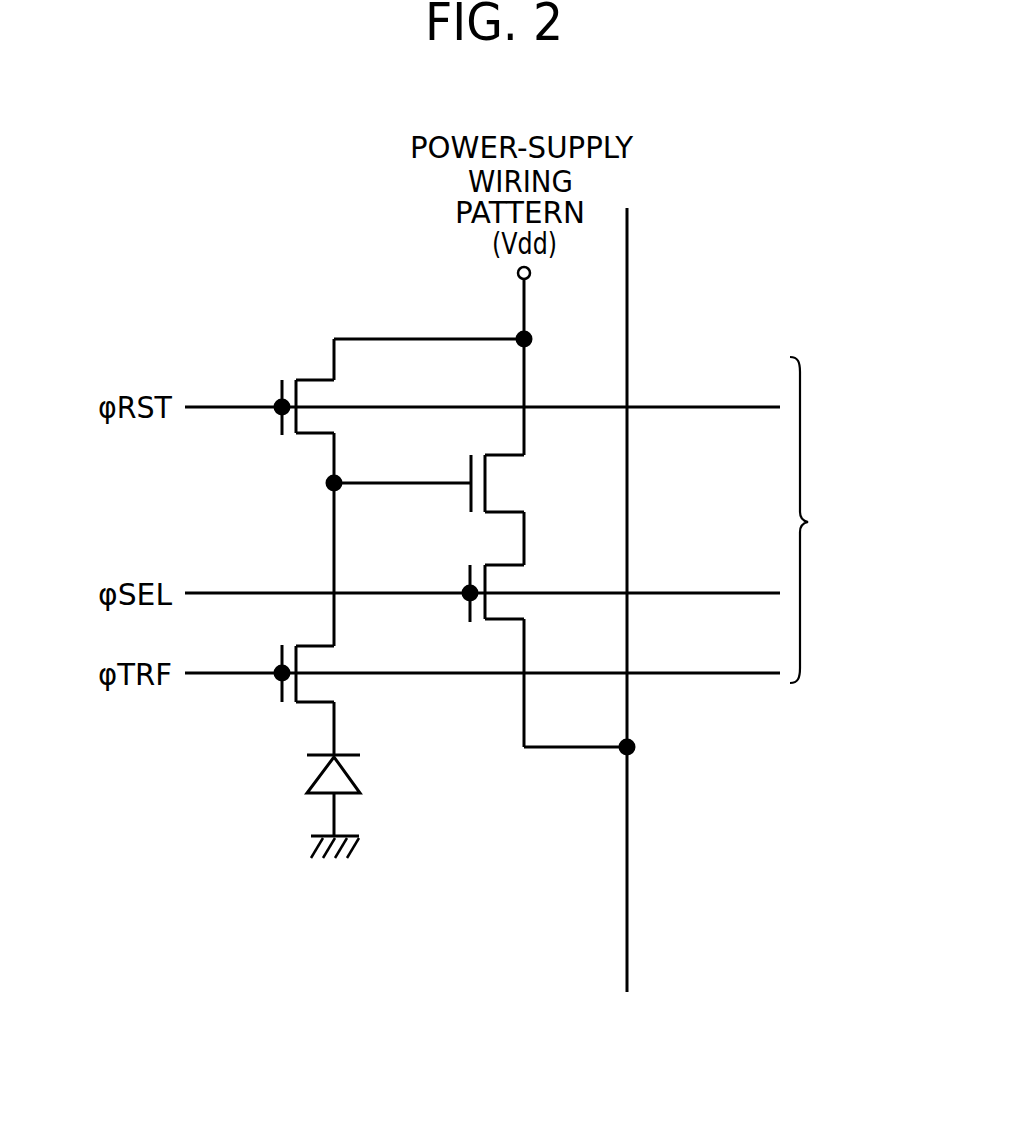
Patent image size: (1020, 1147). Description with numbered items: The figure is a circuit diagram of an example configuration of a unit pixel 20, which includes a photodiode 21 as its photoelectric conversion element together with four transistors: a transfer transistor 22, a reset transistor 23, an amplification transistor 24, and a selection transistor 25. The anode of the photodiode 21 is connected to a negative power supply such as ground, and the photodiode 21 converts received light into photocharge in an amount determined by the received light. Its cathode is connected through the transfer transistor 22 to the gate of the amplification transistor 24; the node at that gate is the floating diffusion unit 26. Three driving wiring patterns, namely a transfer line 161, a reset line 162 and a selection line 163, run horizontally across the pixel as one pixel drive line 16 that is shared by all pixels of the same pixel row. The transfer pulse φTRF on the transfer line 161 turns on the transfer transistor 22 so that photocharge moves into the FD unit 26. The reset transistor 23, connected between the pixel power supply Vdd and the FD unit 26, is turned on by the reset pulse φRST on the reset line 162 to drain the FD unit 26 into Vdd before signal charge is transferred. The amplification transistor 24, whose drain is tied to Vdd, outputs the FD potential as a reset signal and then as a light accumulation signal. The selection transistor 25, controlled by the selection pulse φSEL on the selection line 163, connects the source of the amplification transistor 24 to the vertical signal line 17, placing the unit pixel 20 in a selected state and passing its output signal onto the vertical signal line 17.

The unit pixel 20 is at (727, 208).
The photodiode 21 is at (352, 778).
The transfer transistor 22 is at (332, 665).
The reset transistor 23 is at (332, 397).
The amplification transistor 24 is at (515, 488).
The selection transistor 25 is at (516, 583).
The floating diffusion unit 26 is at (326, 484).
The pixel drive line 16 is at (816, 520).
The transfer line 161 is at (693, 672).
The reset line 162 is at (693, 406).
The selection line 163 is at (693, 592).
The vertical signal line 17 is at (627, 876).